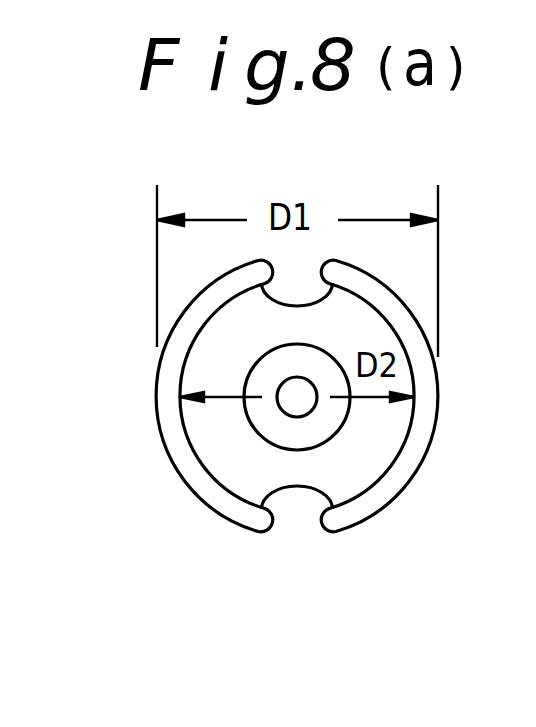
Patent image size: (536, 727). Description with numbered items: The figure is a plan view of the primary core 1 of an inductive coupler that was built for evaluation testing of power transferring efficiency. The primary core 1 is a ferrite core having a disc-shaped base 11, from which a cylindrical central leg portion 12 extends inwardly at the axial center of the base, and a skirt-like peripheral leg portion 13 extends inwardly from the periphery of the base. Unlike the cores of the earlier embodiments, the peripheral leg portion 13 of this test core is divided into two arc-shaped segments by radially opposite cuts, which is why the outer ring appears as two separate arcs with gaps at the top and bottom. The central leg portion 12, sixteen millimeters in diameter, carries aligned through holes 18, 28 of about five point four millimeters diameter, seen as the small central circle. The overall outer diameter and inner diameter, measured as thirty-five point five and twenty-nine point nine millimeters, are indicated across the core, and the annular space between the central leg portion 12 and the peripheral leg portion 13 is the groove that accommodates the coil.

The primary core 1 is at (291, 431).
The base 11 is at (295, 472).
The central leg portion 12 is at (327, 420).
The peripheral leg portion 13 is at (155, 383).
The through hole 18 is at (188, 488).
The through hole 28 is at (288, 403).